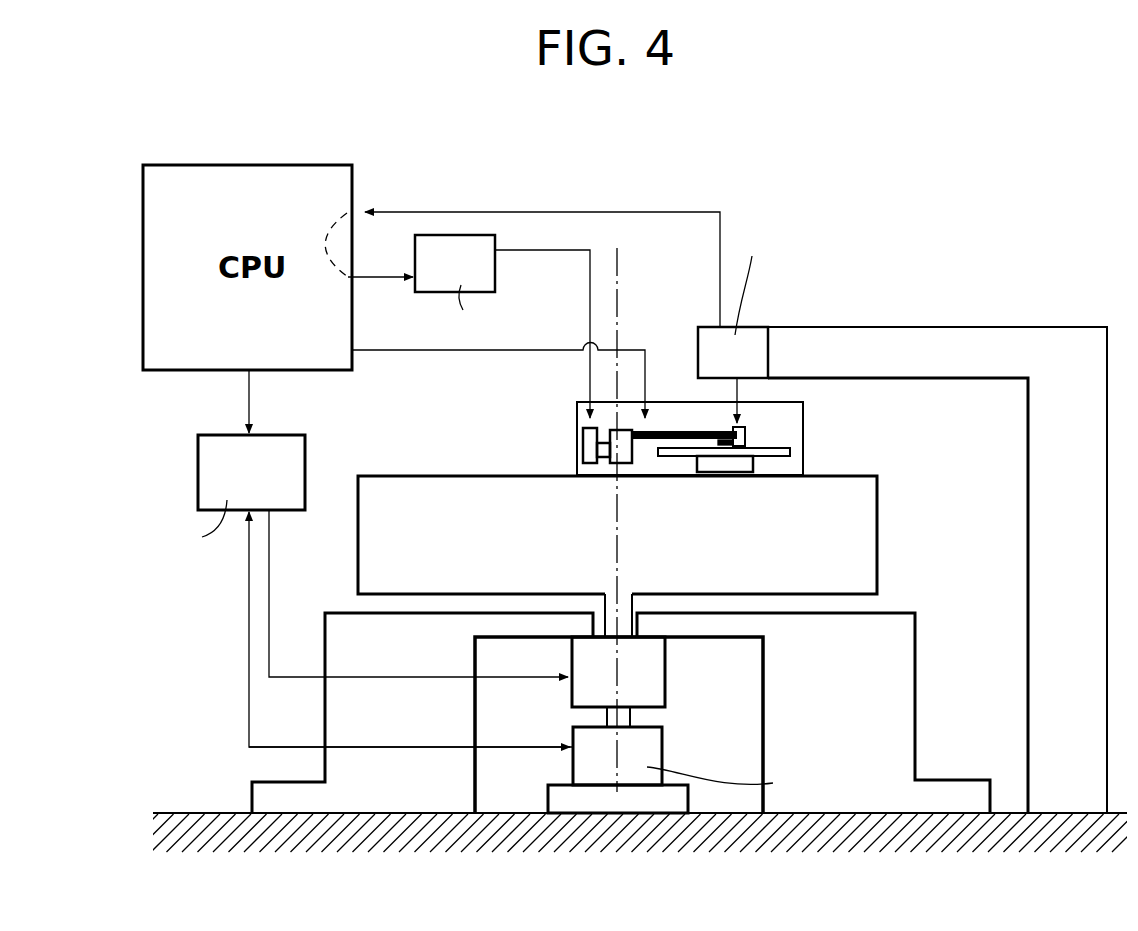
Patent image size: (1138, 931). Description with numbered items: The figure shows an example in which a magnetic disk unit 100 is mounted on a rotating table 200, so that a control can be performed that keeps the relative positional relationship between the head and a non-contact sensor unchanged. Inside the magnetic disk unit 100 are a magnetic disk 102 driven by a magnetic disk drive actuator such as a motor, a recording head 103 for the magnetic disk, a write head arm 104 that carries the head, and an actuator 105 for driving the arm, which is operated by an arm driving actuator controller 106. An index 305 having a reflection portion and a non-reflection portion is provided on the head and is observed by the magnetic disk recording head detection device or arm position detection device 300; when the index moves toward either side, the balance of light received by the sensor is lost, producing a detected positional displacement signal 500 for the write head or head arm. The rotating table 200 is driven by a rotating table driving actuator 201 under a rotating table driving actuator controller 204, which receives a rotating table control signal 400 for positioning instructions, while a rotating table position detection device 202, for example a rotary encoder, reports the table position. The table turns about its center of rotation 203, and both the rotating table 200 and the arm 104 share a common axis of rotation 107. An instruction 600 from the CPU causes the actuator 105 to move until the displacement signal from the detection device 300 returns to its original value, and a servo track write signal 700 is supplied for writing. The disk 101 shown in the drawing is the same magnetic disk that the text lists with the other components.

The magnetic disk unit 100 is at (577, 414).
The disk 101 is at (787, 447).
The magnetic disk 102 is at (753, 467).
The recording head 103 is at (745, 441).
The write head arm 104 is at (658, 430).
The actuator 105 is at (583, 445).
The arm driving actuator controller 106 is at (477, 234).
The axis of rotation 107 is at (617, 298).
The rotating table 200 is at (392, 476).
The rotating table driving actuator 201 is at (665, 677).
The rotating table position detection device 202 is at (662, 748).
The center of rotation 203 is at (650, 803).
The rotating table driving actuator controller 204 is at (197, 477).
The arm position detection device 300 is at (760, 327).
The index 305 is at (748, 441).
The rotating table control signal 400 is at (280, 401).
The detected positional displacement signal 500 is at (542, 253).
The instruction 600 is at (380, 302).
The servo track write signal 700 is at (498, 381).